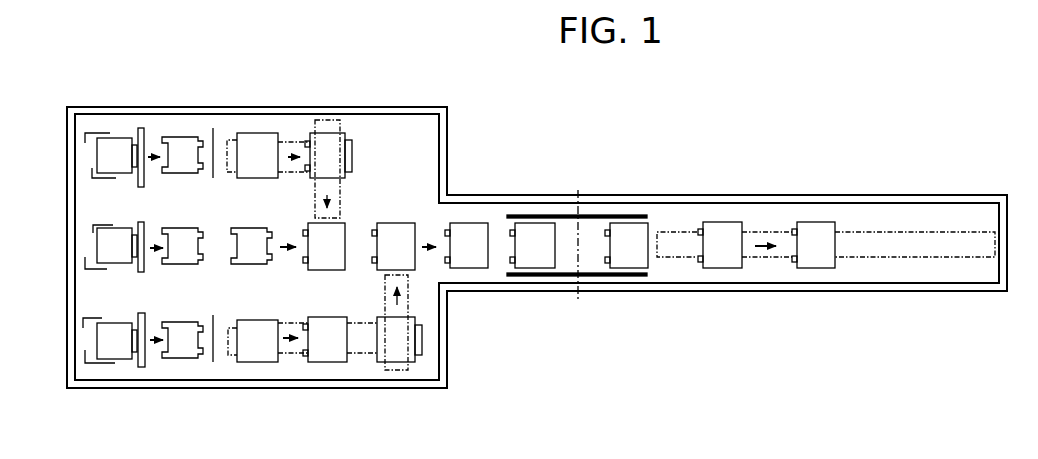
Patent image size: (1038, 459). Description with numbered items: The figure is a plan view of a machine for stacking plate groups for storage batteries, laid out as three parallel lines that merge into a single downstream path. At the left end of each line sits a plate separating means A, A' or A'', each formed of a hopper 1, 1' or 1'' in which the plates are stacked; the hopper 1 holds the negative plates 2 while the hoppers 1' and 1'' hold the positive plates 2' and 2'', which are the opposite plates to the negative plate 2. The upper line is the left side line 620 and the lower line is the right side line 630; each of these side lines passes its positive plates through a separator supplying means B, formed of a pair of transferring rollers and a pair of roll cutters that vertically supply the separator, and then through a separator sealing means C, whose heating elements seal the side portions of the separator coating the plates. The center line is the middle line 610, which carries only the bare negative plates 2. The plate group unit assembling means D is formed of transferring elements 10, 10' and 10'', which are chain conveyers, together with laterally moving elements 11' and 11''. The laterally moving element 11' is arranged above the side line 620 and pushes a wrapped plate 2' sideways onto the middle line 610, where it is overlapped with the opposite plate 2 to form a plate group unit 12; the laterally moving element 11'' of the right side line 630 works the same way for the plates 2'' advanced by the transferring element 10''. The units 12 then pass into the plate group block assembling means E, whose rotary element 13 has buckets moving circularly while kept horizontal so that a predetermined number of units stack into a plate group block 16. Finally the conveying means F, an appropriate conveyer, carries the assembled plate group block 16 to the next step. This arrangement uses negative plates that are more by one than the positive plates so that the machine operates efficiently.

The hopper 1 is at (92, 261).
The hopper 1' is at (93, 172).
The hopper 1'' is at (92, 356).
The negative plate 2 is at (117, 269).
The positive plate 2' is at (117, 179).
The positive plate 2'' is at (117, 375).
The transferring element 10 is at (311, 231).
The transferring element 10' is at (323, 115).
The transferring element 10'' is at (308, 322).
The laterally moving element 11' is at (356, 169).
The laterally moving element 11'' is at (376, 322).
The plate group unit 12 is at (470, 223).
The rotary element 13 is at (605, 215).
The plate group block 16 is at (722, 222).
The plate separating means A is at (58, 250).
The plate separating means A' is at (58, 157).
The plate separating means A'' is at (60, 345).
The separator supplying means B is at (212, 128).
The separator sealing means C is at (258, 130).
The plate group unit assembling means D is at (398, 219).
The plate group block assembling means E is at (567, 278).
The conveying means F is at (778, 259).
The middle line 610 is at (197, 294).
The left side line 620 is at (202, 194).
The right side line 630 is at (211, 404).